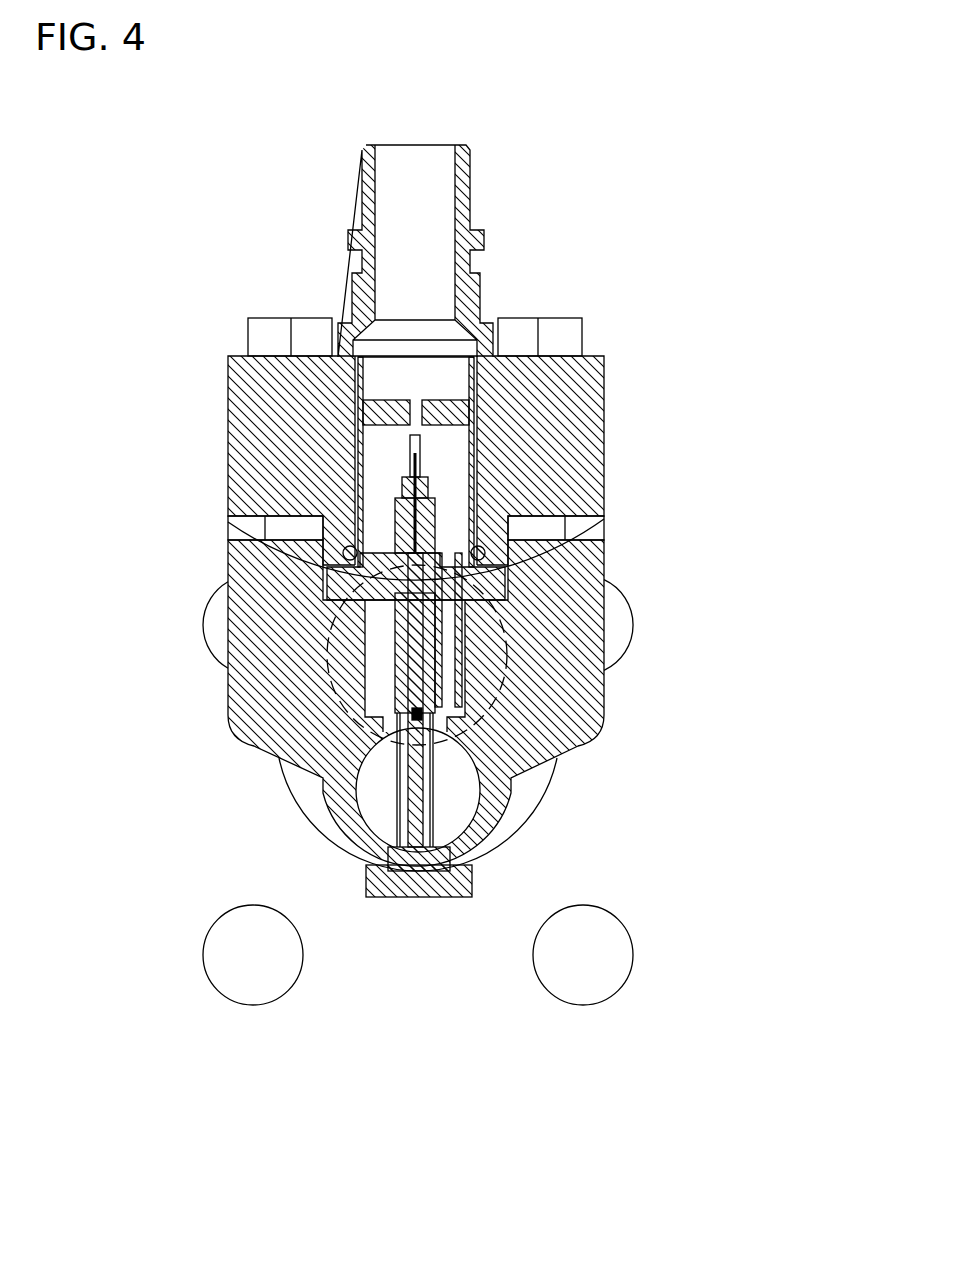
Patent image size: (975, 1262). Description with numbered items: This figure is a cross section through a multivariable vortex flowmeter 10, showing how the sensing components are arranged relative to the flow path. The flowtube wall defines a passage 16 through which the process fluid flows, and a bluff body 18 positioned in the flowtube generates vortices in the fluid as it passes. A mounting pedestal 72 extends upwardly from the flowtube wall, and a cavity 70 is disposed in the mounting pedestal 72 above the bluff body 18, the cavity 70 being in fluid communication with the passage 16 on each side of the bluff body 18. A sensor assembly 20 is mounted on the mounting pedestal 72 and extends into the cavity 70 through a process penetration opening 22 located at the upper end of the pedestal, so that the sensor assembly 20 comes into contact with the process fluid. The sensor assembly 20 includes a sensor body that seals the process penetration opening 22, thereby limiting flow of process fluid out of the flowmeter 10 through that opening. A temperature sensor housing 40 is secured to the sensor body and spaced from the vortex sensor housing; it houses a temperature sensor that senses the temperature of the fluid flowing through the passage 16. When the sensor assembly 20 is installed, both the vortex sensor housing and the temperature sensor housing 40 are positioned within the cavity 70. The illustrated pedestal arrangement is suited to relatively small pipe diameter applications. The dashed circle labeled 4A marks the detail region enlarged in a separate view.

The multivariable vortex flowmeter 10 is at (718, 162).
The passage 16 is at (392, 817).
The bluff body 18 is at (450, 835).
The sensor assembly 20 is at (495, 565).
The process penetration opening 22 is at (512, 592).
The temperature sensor housing 40 is at (466, 662).
The cavity 70 is at (378, 686).
The mounting pedestal 72 is at (228, 615).
The detail region 4A is at (500, 672).